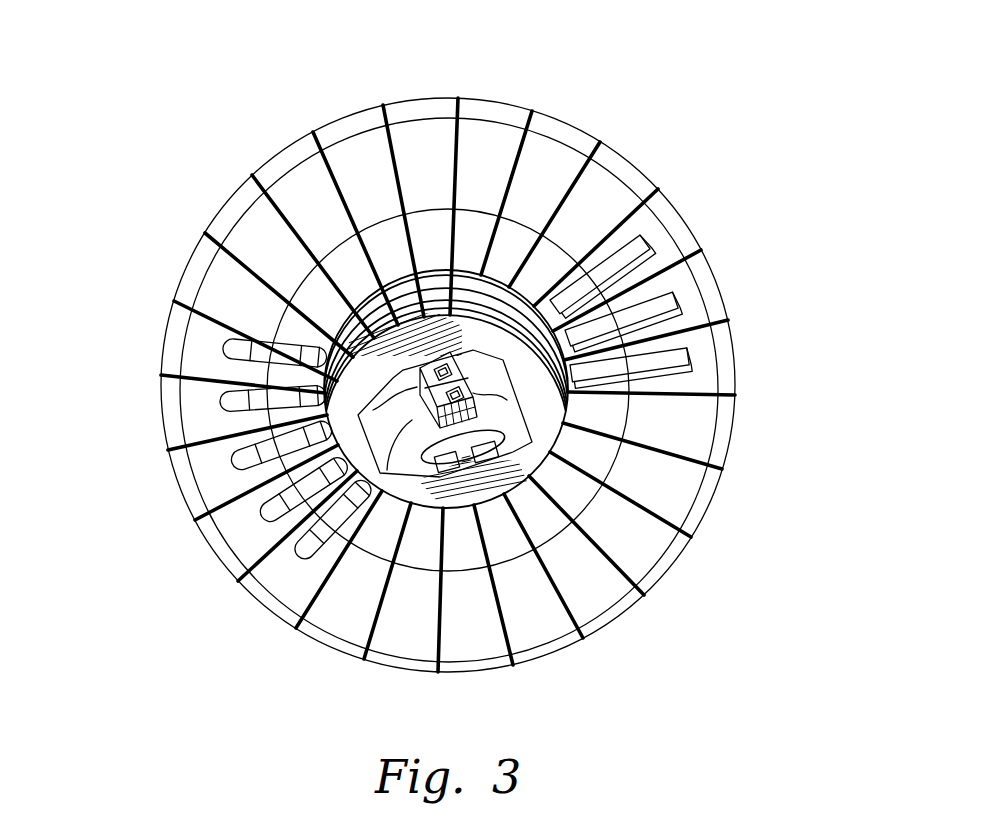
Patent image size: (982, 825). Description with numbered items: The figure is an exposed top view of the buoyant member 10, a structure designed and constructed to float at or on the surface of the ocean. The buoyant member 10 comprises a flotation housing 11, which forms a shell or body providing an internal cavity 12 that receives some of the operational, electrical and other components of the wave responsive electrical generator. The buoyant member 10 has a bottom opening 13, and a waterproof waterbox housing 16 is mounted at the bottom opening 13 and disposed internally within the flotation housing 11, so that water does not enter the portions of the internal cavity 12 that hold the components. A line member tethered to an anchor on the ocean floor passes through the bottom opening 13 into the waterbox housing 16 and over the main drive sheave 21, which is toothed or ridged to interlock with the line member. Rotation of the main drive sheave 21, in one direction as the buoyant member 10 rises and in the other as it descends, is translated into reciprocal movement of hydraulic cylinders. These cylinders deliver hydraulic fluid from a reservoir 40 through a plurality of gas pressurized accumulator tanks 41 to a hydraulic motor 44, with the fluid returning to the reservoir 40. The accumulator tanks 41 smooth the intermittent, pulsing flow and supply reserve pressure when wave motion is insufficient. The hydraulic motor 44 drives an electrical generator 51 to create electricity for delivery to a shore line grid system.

The buoyant member 10 is at (340, 101).
The flotation housing 11 is at (200, 242).
The internal cavity 12 is at (470, 338).
The bottom opening 13 is at (665, 470).
The waterbox housing 16 is at (407, 382).
The main drive sheave 21 is at (380, 580).
The hydraulic fluid reservoir 40 is at (647, 240).
The accumulator tanks 41 is at (218, 399).
The hydraulic motor 44 is at (452, 470).
The electrical generator 51 is at (494, 458).